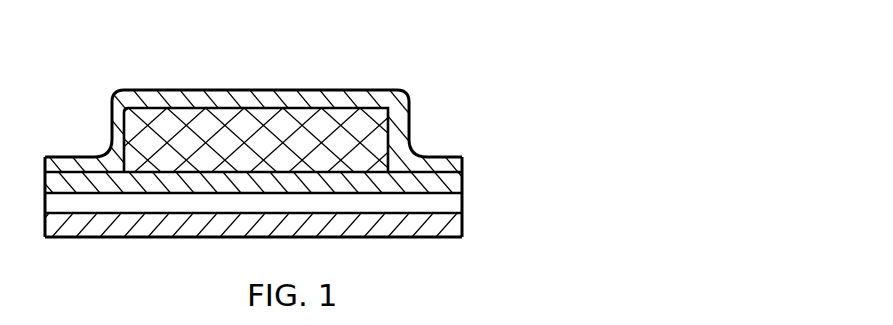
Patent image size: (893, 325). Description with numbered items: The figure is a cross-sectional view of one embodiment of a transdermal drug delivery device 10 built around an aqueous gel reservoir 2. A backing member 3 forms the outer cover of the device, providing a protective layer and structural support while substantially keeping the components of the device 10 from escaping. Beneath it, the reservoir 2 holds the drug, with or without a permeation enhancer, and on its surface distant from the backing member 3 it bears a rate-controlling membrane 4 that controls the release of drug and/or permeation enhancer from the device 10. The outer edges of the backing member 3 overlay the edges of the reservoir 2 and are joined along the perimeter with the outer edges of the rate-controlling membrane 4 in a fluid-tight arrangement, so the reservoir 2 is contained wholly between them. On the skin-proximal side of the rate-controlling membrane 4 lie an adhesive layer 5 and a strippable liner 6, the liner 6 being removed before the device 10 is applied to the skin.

The drug delivery device 10 is at (470, 65).
The aqueous gel reservoir 2 is at (370, 136).
The backing member 3 is at (342, 100).
The rate-controlling membrane 4 is at (430, 178).
The adhesive layer 5 is at (435, 202).
The strippable liner 6 is at (428, 224).